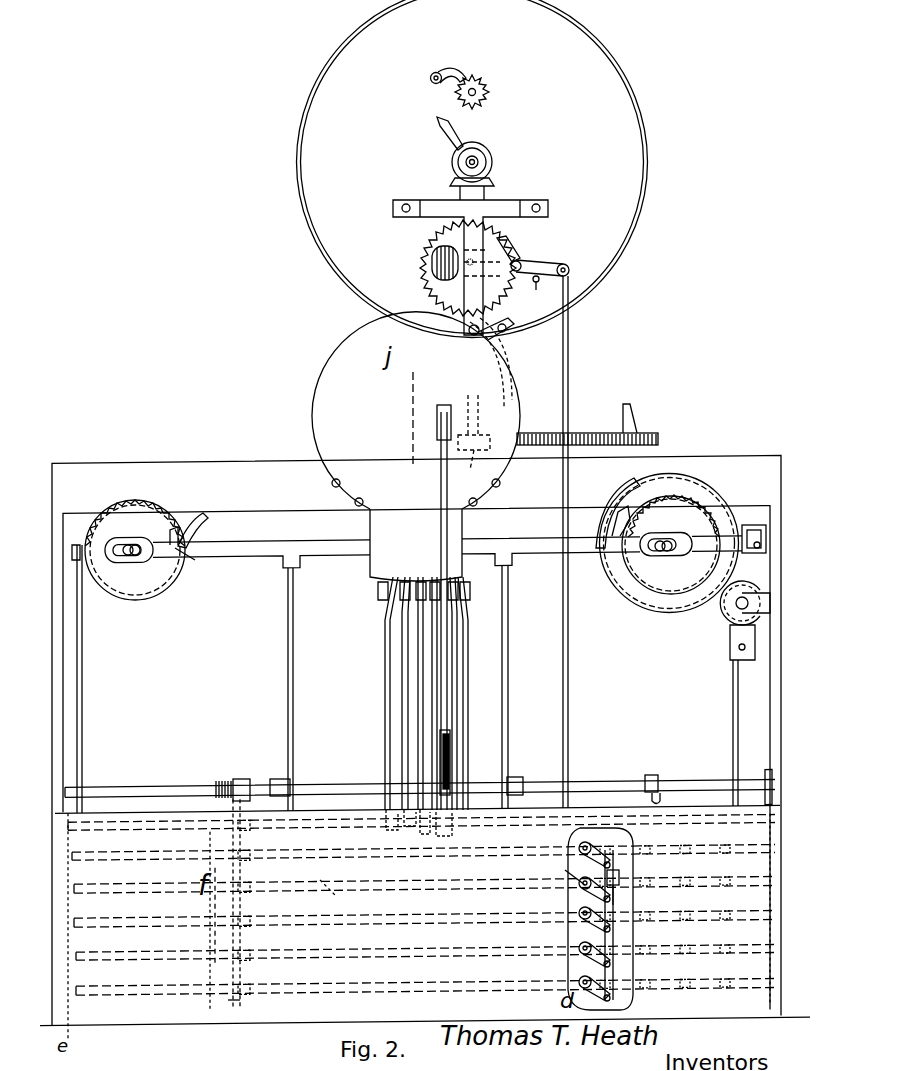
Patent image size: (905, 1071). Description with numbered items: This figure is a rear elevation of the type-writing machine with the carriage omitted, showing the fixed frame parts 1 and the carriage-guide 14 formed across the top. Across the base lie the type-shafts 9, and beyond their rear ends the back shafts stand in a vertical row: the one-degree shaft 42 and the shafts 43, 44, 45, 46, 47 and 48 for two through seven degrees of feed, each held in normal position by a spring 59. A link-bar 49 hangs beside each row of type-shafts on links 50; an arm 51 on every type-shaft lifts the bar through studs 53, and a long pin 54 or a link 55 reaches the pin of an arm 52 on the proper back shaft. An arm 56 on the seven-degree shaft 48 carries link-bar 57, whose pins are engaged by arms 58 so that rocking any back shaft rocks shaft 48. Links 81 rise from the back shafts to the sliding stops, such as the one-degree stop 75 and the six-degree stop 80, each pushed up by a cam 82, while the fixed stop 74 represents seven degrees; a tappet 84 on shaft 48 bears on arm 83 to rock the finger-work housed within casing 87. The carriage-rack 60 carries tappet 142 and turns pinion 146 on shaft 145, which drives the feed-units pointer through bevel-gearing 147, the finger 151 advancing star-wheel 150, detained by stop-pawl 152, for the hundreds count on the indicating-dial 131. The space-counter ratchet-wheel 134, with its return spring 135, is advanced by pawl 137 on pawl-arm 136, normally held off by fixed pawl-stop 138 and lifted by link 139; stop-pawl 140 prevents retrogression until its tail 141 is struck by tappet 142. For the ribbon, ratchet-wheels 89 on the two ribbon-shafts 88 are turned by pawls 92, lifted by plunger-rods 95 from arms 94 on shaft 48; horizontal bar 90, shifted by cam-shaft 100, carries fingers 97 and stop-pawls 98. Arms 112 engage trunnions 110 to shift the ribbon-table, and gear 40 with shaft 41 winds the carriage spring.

The general fixed frame parts 1 is at (80, 840).
The type-shaft 9 is at (442, 873).
The carriage-guide 14 is at (182, 473).
The gear 40 is at (680, 606).
The shaft 41 is at (737, 610).
The one-degree shaft 42 is at (162, 991).
The two-degree back shaft 43 is at (158, 955).
The three-degree back shaft 44 is at (160, 923).
The four-degree back shaft 45 is at (140, 889).
The five-degree back shaft 46 is at (145, 856).
The six-degree back shaft 47 is at (120, 827).
The seven-degree back shaft 48 is at (135, 799).
The link-bar 49 is at (613, 920).
The link 50 is at (600, 852).
The arm 51 is at (585, 920).
The arm 52 is at (652, 775).
The studs 53 is at (612, 962).
The long pin 54 is at (615, 895).
The link 55 is at (650, 798).
The arm 56 is at (243, 779).
The link-bar 57 is at (228, 1000).
The arm 58 is at (240, 930).
The spring 59 is at (225, 781).
The carriage-rack 60 is at (522, 433).
The fixed stop 74 is at (378, 585).
The sliding stop 75 is at (470, 588).
The sliding stop 80 is at (400, 590).
The links 81 is at (385, 695).
The cam 82 is at (400, 830).
The arm 83 is at (441, 517).
The tappet 84 is at (448, 755).
The casing 87 is at (322, 410).
The ribbon-shaft 88 is at (135, 545).
The ratchet-wheel 89 is at (160, 582).
The horizontal bar 90 is at (305, 546).
The pawl 92 is at (195, 560).
The arms 94 is at (518, 777).
The plunger-rod 95 is at (288, 670).
The finger 97 is at (172, 530).
The stop-pawl 98 is at (198, 515).
The cam-shaft 100 is at (752, 525).
The trunnion 110 is at (70, 552).
The arms 112 is at (82, 735).
The indicating-dial 131 is at (628, 222).
The ratchet-wheel 134 is at (432, 258).
The spring 135 is at (427, 272).
The pawl-arm 136 is at (568, 262).
The pawl 137 is at (520, 262).
The fixed pawl-stop 138 is at (538, 290).
The link 139 is at (568, 395).
The stop-pawl 140 is at (490, 338).
The tail 141 is at (504, 402).
The tappet 142 is at (640, 410).
The shaft 145 is at (460, 400).
The pinion 146 is at (490, 478).
The bevel-gearing 147 is at (492, 168).
The star-wheel 150 is at (490, 92).
The finger 151 is at (448, 141).
The stop-pawl 152 is at (454, 62).